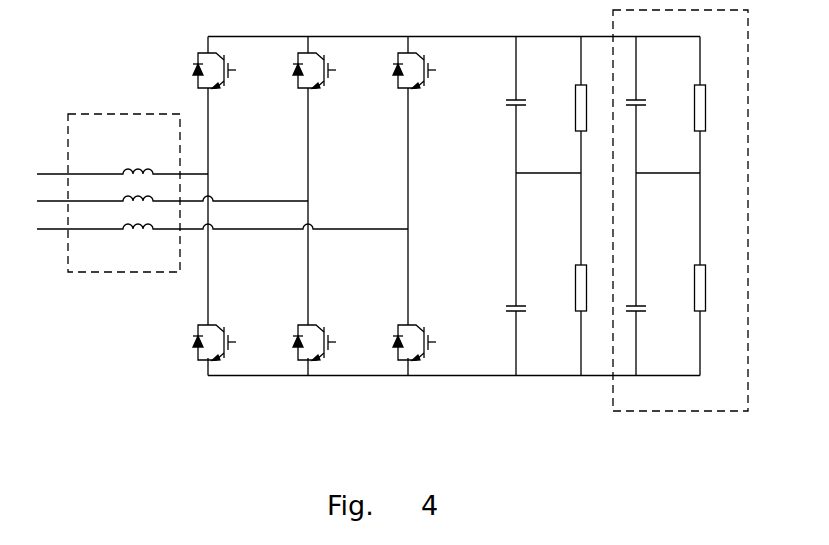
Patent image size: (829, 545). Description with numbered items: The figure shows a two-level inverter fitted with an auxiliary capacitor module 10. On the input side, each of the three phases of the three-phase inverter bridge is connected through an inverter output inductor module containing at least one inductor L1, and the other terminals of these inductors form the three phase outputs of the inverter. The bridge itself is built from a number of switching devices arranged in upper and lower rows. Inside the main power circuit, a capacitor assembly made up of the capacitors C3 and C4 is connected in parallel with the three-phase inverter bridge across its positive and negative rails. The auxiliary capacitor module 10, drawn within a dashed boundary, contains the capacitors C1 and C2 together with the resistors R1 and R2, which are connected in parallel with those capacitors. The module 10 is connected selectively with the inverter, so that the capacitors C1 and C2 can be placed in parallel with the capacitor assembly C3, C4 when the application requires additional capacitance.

The inductor L1 is at (222, 193).
The capacitor C1 is at (649, 105).
The capacitor C2 is at (649, 274).
The capacitor C3 is at (501, 105).
The capacitor C4 is at (497, 274).
The resistor R1 is at (718, 105).
The resistor R2 is at (718, 274).
The auxiliary capacitor module 10 is at (680, 239).